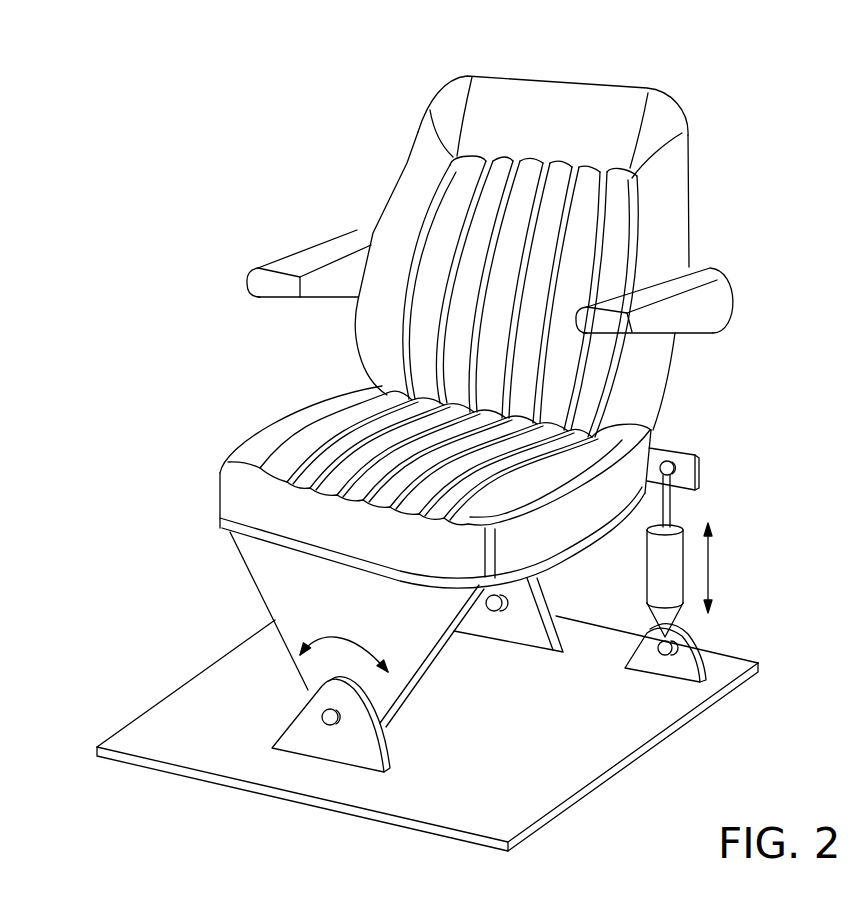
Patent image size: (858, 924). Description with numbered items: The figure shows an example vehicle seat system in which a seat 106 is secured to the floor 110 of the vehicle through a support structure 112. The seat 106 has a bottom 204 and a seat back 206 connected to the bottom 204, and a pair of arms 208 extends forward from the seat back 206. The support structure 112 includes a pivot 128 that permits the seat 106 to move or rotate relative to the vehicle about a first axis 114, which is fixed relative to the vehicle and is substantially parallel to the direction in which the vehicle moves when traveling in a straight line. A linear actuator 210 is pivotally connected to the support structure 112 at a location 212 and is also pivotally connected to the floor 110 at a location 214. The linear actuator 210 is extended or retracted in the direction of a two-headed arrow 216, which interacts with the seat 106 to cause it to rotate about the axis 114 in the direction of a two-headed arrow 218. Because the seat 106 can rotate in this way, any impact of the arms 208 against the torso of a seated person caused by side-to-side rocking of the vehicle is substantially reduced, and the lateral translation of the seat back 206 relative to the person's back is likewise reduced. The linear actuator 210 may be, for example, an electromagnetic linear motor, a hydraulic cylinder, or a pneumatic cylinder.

The seat 106 is at (347, 353).
The seat back 206 is at (552, 115).
The arms 208 is at (310, 243).
The bottom 204 is at (220, 487).
The support structure 112 is at (260, 567).
The two-headed arrow 218 is at (340, 637).
The pivot 128 is at (313, 740).
The first axis 114 is at (321, 719).
The floor 110 is at (577, 750).
The location 212 is at (668, 461).
The linear actuator 210 is at (684, 527).
The two-headed arrow 216 is at (709, 555).
The location 214 is at (702, 674).